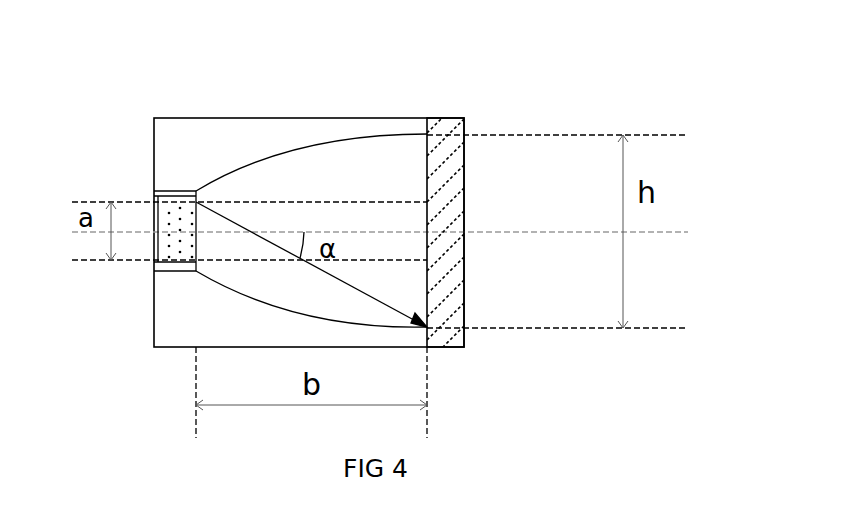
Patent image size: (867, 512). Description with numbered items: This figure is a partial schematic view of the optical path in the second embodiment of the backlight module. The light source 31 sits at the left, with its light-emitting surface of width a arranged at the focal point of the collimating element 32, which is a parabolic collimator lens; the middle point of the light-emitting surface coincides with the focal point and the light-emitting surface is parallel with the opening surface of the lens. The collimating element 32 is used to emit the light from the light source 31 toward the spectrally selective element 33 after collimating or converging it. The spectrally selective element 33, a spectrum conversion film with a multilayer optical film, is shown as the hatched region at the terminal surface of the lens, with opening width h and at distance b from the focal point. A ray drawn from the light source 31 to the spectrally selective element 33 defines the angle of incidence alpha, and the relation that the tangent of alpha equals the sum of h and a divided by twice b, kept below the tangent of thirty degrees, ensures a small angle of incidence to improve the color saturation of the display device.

The light source 31 is at (227, 140).
The collimating element 32 is at (319, 168).
The spectrally selective element 33 is at (525, 198).